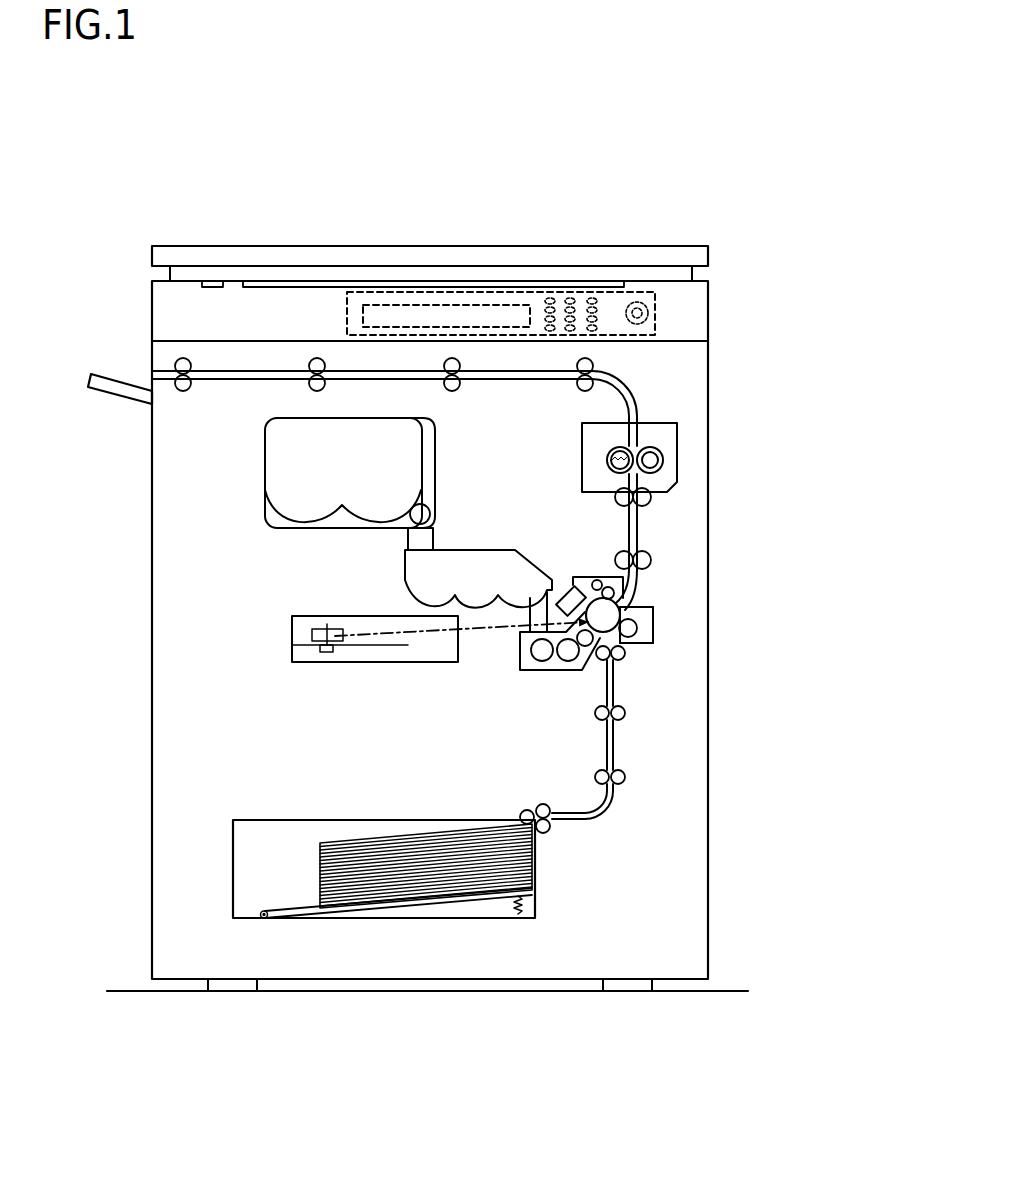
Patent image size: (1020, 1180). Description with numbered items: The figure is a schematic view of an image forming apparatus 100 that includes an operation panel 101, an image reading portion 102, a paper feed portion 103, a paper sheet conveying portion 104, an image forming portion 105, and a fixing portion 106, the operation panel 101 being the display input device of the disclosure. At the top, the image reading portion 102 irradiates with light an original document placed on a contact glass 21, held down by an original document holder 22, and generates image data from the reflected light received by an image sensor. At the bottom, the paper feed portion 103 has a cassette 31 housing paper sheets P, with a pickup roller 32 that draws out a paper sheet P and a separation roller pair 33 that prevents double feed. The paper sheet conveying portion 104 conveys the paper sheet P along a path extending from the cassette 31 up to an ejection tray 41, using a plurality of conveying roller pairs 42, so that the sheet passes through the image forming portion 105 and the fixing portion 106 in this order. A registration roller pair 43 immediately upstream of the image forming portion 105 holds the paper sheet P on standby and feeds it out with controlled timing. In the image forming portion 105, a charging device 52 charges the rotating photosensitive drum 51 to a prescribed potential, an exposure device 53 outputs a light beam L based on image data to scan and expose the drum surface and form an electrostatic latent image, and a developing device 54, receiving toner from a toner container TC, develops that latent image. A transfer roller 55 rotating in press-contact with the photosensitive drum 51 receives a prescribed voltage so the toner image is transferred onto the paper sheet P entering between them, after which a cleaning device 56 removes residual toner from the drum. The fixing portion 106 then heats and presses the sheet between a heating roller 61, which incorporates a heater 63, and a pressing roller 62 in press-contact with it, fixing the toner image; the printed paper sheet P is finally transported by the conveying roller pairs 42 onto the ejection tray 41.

The image forming apparatus 100 is at (190, 246).
The original document holder 22 is at (457, 256).
The contact glass 21 is at (548, 290).
The operation panel 101 is at (345, 310).
The image reading portion 102 is at (710, 321).
The ejection tray 41 is at (118, 385).
The conveying roller pairs 42 is at (183, 392).
The paper sheet conveying portion 104 is at (522, 382).
The fixing portion 106 is at (680, 448).
The heating roller 61 is at (609, 460).
The pressing roller 62 is at (650, 446).
The heater 63 is at (613, 449).
The toner container TC is at (267, 468).
The exposure device 53 is at (292, 638).
The light beam L is at (376, 625).
The photosensitive drum 51 is at (590, 599).
The charging device 52 is at (570, 595).
The cleaning device 56 is at (588, 576).
The transfer roller 55 is at (653, 618).
The image forming portion 105 is at (656, 631).
The developing device 54 is at (520, 654).
The registration roller pair 43 is at (626, 652).
The paper feed portion 103 is at (367, 828).
The cassette 31 is at (258, 820).
The paper sheet P is at (322, 842).
The pickup roller 32 is at (522, 811).
The separation roller pair 33 is at (548, 834).